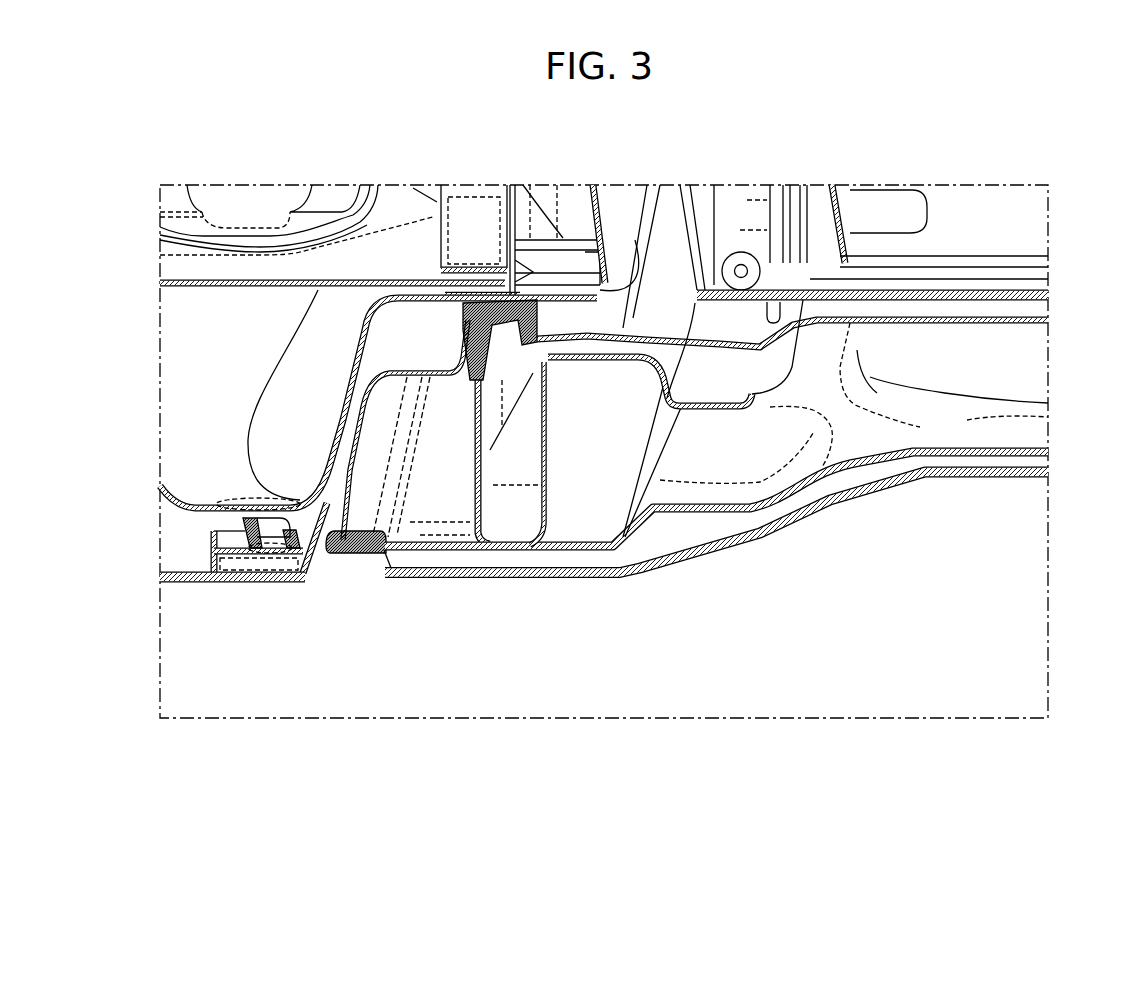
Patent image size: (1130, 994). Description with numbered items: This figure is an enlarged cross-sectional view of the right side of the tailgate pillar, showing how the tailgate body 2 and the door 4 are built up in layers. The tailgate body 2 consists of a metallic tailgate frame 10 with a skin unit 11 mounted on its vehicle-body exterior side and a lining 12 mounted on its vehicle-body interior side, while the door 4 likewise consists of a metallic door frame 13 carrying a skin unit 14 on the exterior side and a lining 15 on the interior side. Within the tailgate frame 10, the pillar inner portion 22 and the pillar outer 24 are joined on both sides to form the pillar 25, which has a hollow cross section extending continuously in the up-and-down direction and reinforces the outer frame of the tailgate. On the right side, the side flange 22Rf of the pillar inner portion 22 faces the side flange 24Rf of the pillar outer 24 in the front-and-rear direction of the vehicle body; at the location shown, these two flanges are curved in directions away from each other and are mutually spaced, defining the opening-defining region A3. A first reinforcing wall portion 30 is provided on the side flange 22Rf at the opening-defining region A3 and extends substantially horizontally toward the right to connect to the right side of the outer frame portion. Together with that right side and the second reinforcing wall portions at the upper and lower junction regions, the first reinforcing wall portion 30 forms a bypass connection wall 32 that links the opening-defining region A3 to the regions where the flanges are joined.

The tailgate body 2 is at (1013, 475).
The door 4 is at (190, 583).
The tailgate frame 10 is at (628, 543).
The skin unit 11 is at (960, 323).
The lining 12 is at (780, 532).
The door frame 13 is at (185, 505).
The skin unit 14 is at (215, 293).
The lining 15 is at (250, 583).
The pillar inner portion 22 is at (570, 551).
The side flange 22Rf is at (750, 512).
The pillar outer 24 is at (583, 357).
The side flange 24Rf is at (722, 405).
The pillar 25 is at (651, 341).
The first reinforcing wall portion 30 is at (913, 453).
The bypass connection wall 32 is at (913, 453).
The opening-defining region A3 is at (717, 512).